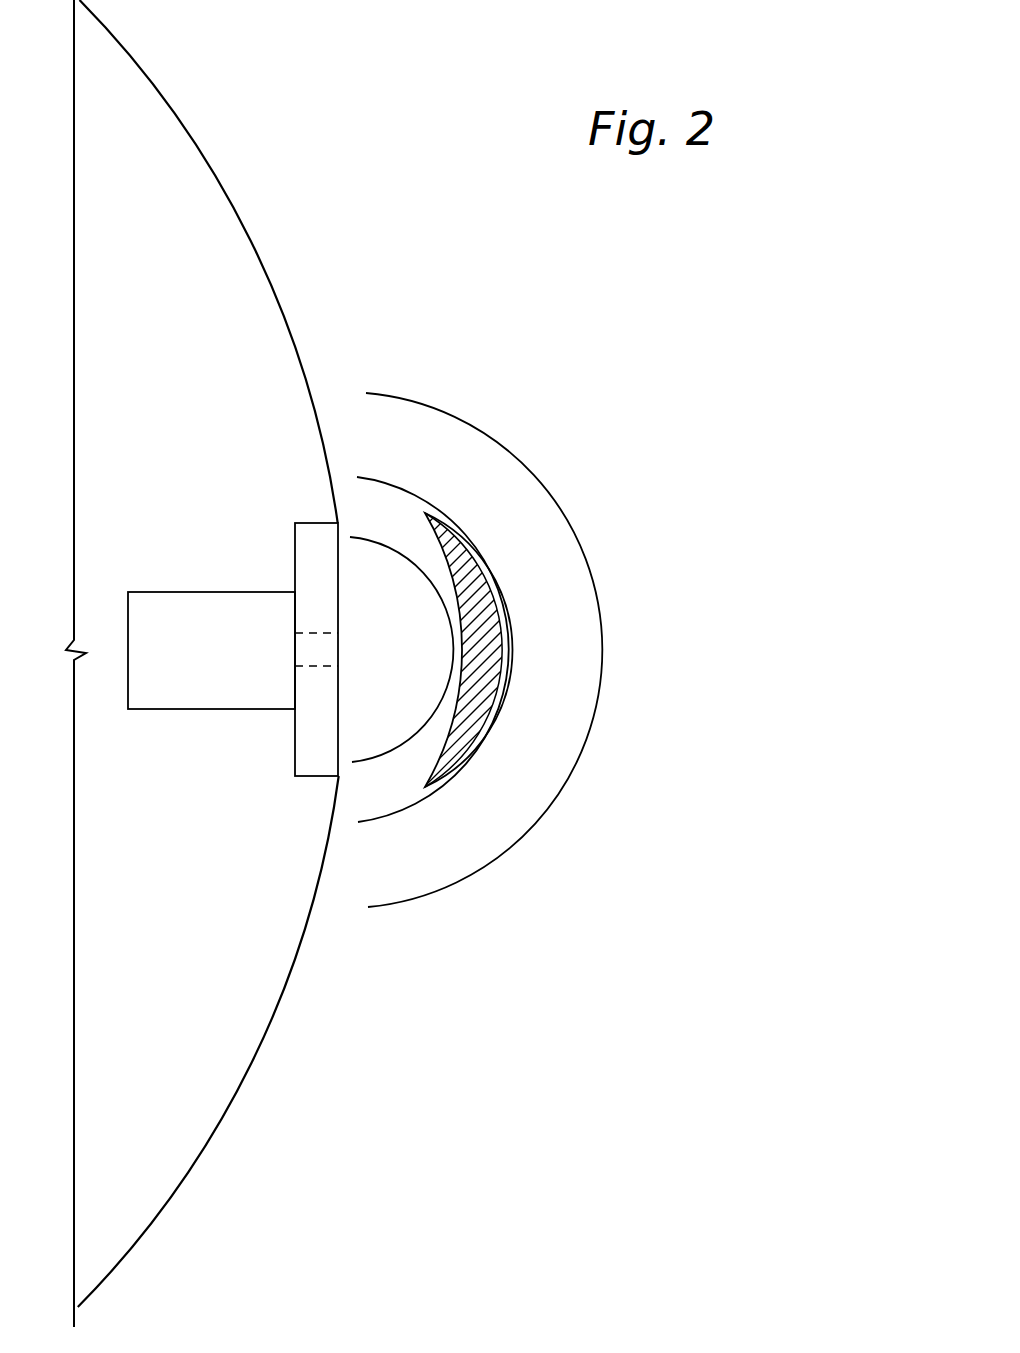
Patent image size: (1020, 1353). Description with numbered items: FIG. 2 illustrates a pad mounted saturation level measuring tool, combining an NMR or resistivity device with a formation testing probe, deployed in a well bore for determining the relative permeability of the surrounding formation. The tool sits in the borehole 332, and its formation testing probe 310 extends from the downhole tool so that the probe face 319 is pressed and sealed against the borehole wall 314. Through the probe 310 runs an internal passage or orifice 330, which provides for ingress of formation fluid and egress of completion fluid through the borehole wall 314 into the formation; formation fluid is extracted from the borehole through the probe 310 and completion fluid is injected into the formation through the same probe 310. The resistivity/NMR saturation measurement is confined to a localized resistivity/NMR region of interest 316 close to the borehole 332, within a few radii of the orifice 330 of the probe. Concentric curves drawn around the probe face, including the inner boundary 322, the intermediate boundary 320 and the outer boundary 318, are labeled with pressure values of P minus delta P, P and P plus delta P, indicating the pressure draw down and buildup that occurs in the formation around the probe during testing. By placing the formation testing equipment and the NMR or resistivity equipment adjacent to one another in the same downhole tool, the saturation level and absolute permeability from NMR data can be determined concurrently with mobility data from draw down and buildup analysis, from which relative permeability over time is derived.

The probe 310 is at (203, 592).
The borehole wall 314 is at (258, 1049).
The resistivity/NMR region of interest 316 is at (482, 648).
The outer pressure boundary (P+ΔP) 318 is at (463, 422).
The probe face 319 is at (303, 753).
The pressure boundary P 320 is at (400, 487).
The inner pressure boundary (P-ΔP) 322 is at (393, 553).
The internal passage or orifice 330 is at (332, 648).
The borehole 332 is at (185, 1147).